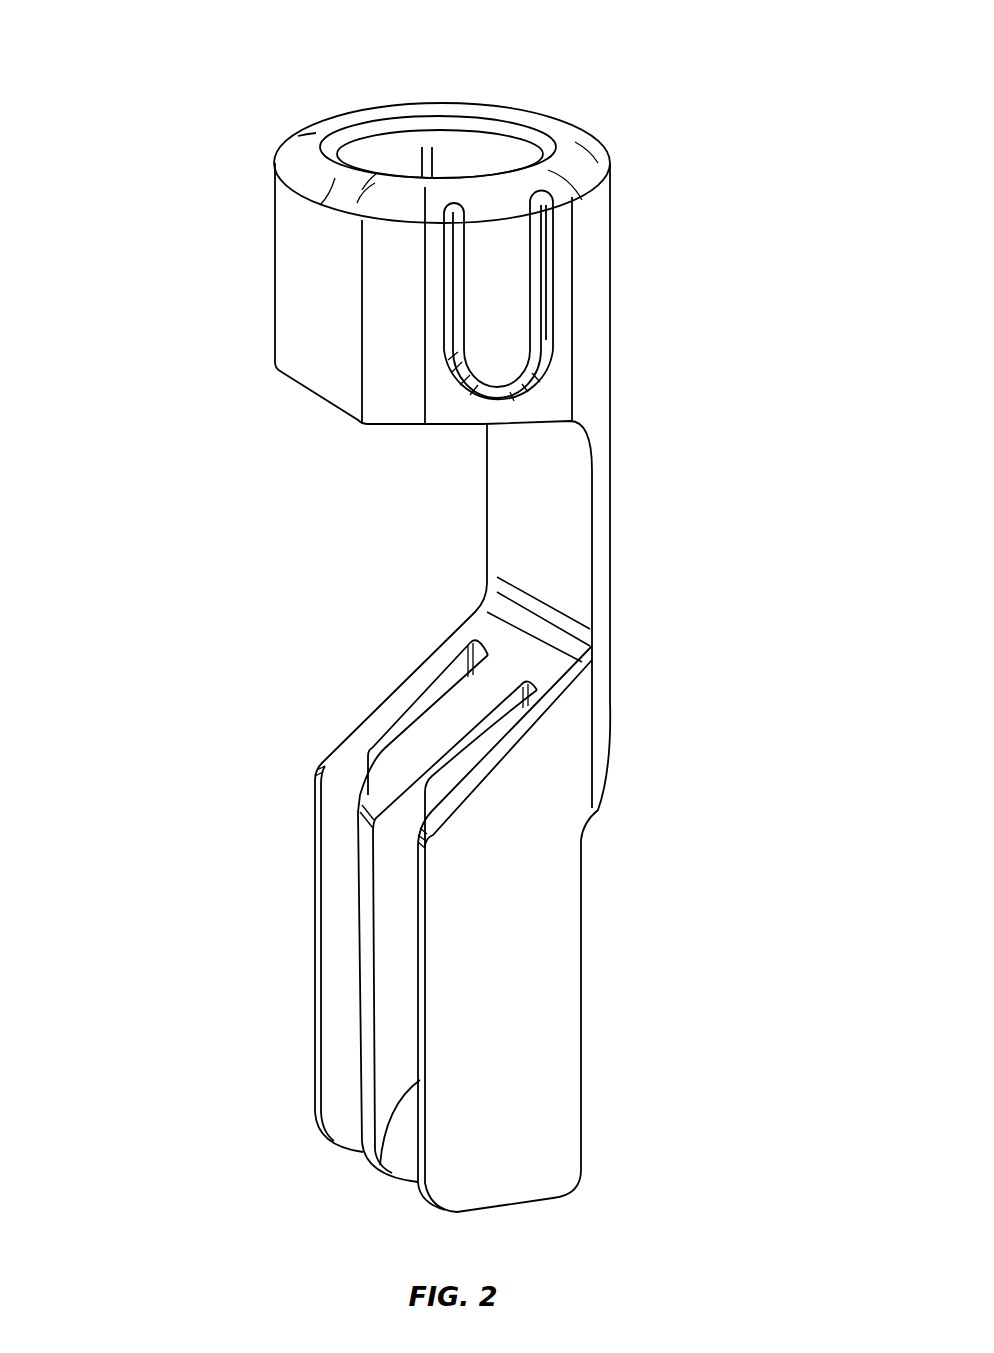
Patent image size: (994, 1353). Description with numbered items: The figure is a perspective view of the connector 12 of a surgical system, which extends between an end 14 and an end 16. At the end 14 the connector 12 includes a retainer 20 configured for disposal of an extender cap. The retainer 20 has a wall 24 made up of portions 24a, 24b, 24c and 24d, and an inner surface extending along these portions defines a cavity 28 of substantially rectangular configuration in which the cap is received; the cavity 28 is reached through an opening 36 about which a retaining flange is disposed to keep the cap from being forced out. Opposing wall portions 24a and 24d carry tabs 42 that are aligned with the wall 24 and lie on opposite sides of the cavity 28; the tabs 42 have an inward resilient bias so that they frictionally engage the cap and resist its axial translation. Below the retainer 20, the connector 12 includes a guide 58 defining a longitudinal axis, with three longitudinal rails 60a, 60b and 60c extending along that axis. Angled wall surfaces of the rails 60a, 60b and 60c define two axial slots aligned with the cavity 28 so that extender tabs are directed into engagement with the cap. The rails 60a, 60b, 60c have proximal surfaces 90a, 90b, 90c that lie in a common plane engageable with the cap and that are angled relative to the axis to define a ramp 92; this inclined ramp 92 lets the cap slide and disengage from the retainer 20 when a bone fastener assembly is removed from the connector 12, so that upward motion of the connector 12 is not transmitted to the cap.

The connector 12 is at (121, 57).
The end 14 is at (655, 215).
The end 16 is at (615, 1190).
The retainer 20 is at (232, 248).
The wall 24 is at (313, 307).
The wall portion 24a is at (323, 340).
The wall portion 24b is at (570, 285).
The wall portion 24c is at (498, 130).
The wall portion 24d is at (342, 115).
The cavity 28 is at (450, 160).
The opening 36 is at (552, 126).
The tabs 42 is at (390, 162).
The guide 58 is at (668, 1045).
The longitudinal rail 60a is at (316, 856).
The longitudinal rail 60b is at (372, 941).
The longitudinal rail 60c is at (419, 999).
The proximal surface 90a is at (400, 693).
The proximal surface 90b is at (440, 728).
The proximal surface 90c is at (470, 785).
The ramp 92 is at (473, 717).